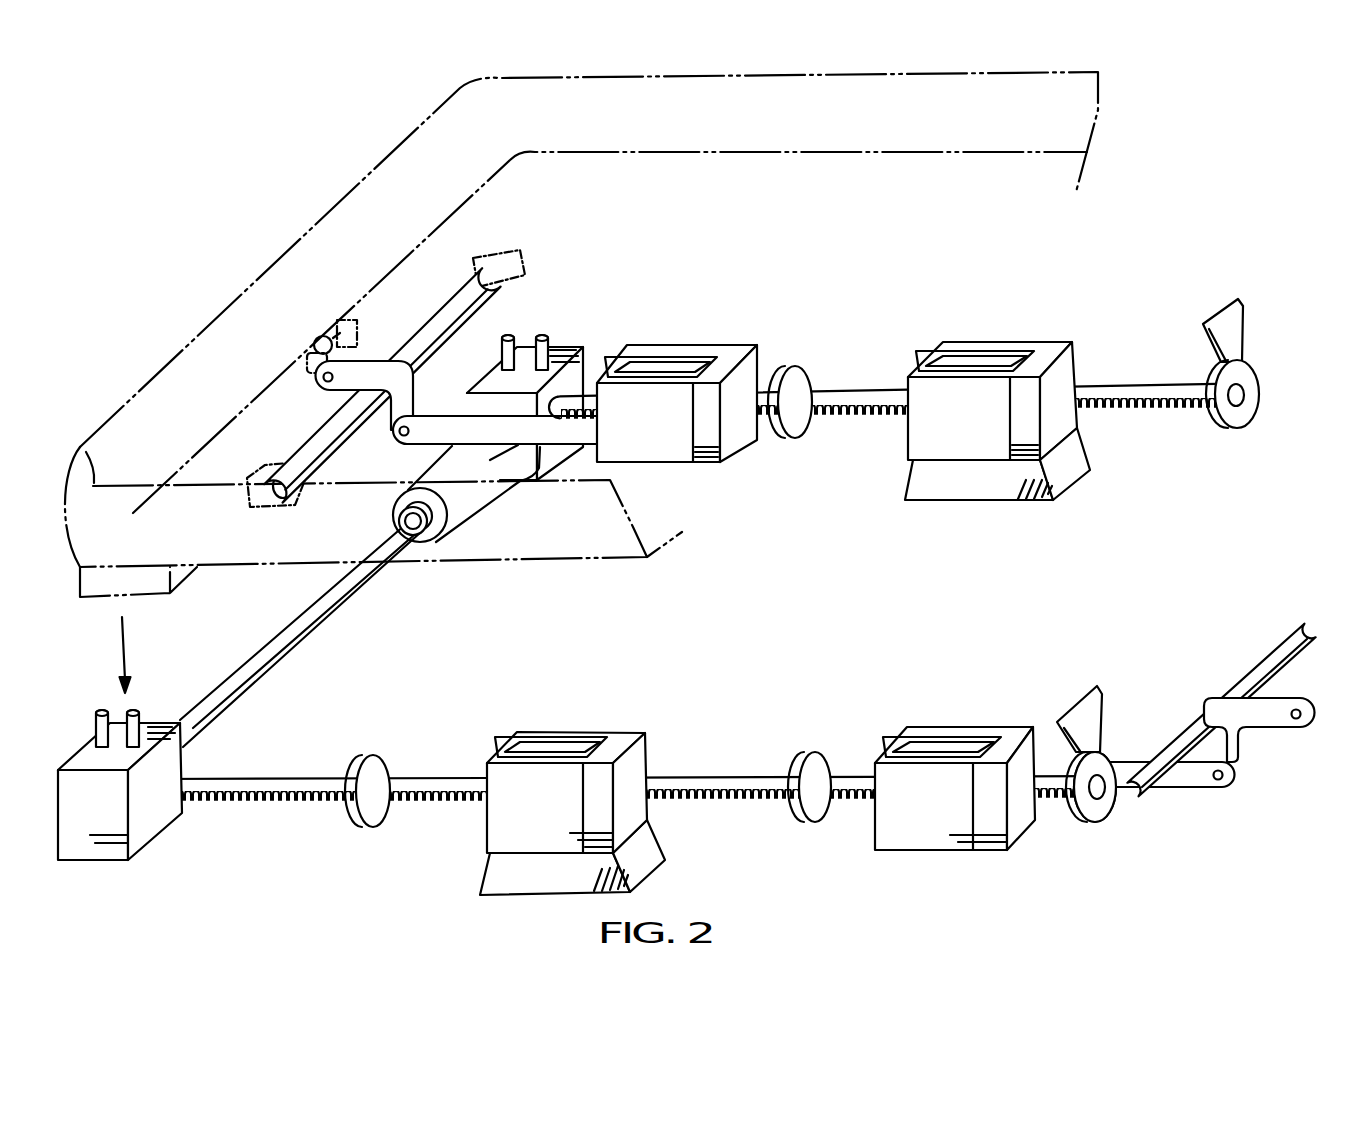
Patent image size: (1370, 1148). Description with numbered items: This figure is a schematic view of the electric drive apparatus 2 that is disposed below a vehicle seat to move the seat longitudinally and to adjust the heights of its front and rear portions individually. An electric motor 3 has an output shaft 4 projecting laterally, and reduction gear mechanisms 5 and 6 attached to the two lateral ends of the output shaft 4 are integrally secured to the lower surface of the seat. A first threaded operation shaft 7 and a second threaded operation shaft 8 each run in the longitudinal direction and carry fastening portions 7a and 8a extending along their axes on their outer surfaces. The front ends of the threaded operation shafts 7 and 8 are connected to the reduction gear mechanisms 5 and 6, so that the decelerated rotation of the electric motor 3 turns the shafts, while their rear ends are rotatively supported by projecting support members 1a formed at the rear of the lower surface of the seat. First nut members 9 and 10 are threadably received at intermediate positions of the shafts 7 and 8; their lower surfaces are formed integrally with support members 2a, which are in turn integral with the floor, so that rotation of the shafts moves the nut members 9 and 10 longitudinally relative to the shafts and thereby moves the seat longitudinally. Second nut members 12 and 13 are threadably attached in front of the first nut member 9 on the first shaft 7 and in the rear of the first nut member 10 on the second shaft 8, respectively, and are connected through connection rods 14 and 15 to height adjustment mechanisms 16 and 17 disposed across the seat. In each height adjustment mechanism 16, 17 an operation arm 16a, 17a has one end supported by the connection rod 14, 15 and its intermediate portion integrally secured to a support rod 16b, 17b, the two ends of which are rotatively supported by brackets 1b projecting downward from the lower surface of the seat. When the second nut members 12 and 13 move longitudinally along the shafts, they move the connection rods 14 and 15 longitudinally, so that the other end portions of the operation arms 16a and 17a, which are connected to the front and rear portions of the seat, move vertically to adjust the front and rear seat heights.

The projecting support member 1a is at (113, 447).
The bracket 1b is at (495, 278).
The electric drive apparatus 2 is at (848, 556).
The support member 2a is at (1007, 487).
The electric motor 3 is at (463, 497).
The output shaft 4 is at (283, 643).
The reduction gear mechanism 5 is at (568, 350).
The reduction gear mechanism 6 is at (172, 760).
The first threaded operation shaft 7 is at (882, 395).
The fastening portion 7a is at (1120, 386).
The second threaded operation shaft 8 is at (617, 787).
The fastening portion 8a is at (720, 778).
The first nut member 9 is at (960, 440).
The first nut member 10 is at (500, 830).
The second nut member 12 is at (677, 455).
The second nut member 13 is at (905, 842).
The connection rod 14 is at (624, 430).
The connection rod 15 is at (1177, 786).
The height adjustment mechanism 16 is at (330, 337).
The operation arm 16a is at (393, 360).
The support rod 16b is at (447, 308).
The height adjustment mechanism 17 is at (1227, 700).
The operation arm 17a is at (1273, 727).
The support rod 17b is at (1273, 663).